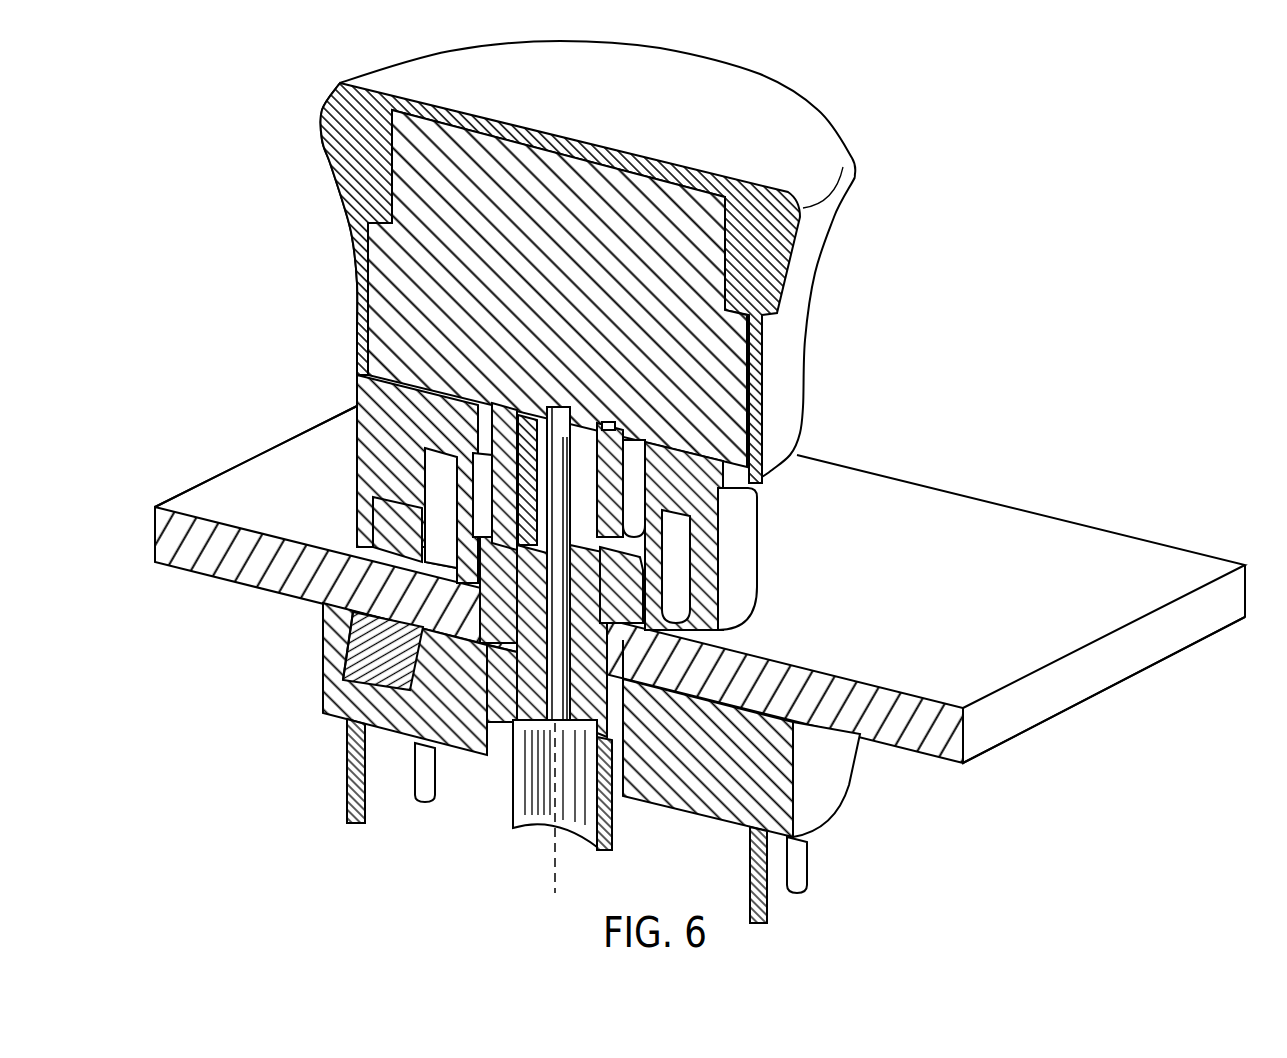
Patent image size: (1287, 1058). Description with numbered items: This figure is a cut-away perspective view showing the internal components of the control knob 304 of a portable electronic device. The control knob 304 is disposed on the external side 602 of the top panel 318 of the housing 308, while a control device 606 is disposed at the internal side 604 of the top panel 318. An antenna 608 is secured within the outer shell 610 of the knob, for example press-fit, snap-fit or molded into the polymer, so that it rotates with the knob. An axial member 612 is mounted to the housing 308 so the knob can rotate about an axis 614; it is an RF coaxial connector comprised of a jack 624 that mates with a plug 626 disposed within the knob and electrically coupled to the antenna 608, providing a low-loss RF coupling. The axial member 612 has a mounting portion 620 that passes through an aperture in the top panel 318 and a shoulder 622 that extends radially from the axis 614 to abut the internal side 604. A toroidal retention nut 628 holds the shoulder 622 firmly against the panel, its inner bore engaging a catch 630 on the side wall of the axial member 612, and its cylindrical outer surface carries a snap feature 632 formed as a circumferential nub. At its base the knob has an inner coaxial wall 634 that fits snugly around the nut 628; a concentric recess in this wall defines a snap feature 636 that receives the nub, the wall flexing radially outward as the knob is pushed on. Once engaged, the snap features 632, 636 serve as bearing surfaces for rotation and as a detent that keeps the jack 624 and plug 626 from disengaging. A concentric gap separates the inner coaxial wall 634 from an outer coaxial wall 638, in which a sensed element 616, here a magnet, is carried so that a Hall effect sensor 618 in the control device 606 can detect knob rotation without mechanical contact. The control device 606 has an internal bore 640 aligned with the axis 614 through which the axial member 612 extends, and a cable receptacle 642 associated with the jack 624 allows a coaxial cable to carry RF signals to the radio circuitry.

The control knob 304 is at (820, 120).
The housing 308 is at (1050, 444).
The top panel 318 is at (247, 492).
The external side 602 is at (959, 581).
The internal side 604 is at (930, 757).
The control device 606 is at (323, 650).
The antenna 608 is at (383, 268).
The outer shell 610 is at (347, 152).
The axial member 612 is at (527, 635).
The axis 614 is at (553, 860).
The sensed element 616 is at (388, 513).
The sensor 618 is at (401, 666).
The mounting portion 620 is at (632, 653).
The shoulder 622 is at (600, 697).
The jack 624 is at (605, 462).
The plug 626 is at (481, 438).
The retention nut 628 is at (360, 613).
The catch 630 is at (563, 563).
The snap feature 632 is at (652, 583).
The inner coaxial wall 634 is at (658, 553).
The snap feature 636 is at (652, 575).
The outer coaxial wall 638 is at (375, 447).
The internal bore 640 is at (643, 797).
The cable receptacle 642 is at (608, 830).